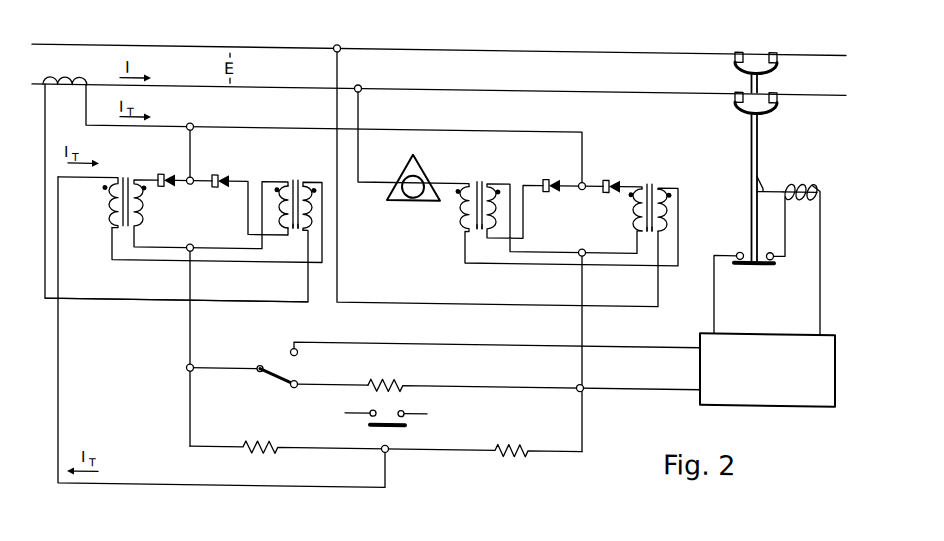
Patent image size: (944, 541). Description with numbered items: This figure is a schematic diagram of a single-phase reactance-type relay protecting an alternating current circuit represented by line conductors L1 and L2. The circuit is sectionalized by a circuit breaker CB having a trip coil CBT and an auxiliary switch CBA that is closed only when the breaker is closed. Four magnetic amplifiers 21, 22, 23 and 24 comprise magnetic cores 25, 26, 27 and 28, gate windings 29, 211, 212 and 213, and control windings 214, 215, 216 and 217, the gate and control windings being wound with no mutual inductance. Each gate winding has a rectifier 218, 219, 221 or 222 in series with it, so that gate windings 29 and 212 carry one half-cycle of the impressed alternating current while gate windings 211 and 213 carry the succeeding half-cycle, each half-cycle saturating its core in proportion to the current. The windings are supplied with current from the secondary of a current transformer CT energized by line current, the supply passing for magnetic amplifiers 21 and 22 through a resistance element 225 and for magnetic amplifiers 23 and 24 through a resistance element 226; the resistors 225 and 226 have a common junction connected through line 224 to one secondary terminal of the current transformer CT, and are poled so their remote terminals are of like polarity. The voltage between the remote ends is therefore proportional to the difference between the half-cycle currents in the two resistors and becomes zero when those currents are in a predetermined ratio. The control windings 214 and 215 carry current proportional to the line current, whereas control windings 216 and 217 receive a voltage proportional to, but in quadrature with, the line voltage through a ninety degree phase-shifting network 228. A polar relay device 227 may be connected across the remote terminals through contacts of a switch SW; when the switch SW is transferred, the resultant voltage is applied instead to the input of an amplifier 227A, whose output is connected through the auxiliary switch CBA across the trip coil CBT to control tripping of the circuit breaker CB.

The magnetic amplifier 21 is at (123, 174).
The magnetic amplifier 22 is at (292, 175).
The magnetic amplifier 23 is at (482, 168).
The magnetic amplifier 24 is at (643, 168).
The magnetic core 25 is at (128, 224).
The magnetic core 26 is at (296, 224).
The magnetic core 27 is at (478, 223).
The magnetic core 28 is at (650, 228).
The gate winding 29 is at (142, 201).
The gate winding 211 is at (276, 206).
The gate winding 212 is at (510, 208).
The gate winding 213 is at (637, 213).
The control winding 214 is at (106, 204).
The control winding 215 is at (308, 211).
The control winding 216 is at (460, 206).
The control winding 217 is at (668, 211).
The rectifier 218 is at (167, 171).
The rectifier 219 is at (217, 171).
The rectifier 221 is at (545, 169).
The rectifier 222 is at (617, 158).
The line 224 is at (170, 302).
The resistance element 225 is at (267, 453).
The resistance element 226 is at (497, 451).
The polar relay device 227 is at (392, 398).
The amplifier 227A is at (700, 359).
The ninety degree phase-shifting network 228 is at (407, 159).
The current transformer CT is at (62, 72).
The circuit breaker CB is at (757, 51).
The trip coil CBT is at (795, 172).
The auxiliary switch CBA is at (755, 257).
The switch SW is at (273, 359).
The line conductor L1 is at (452, 44).
The line conductor L2 is at (452, 84).